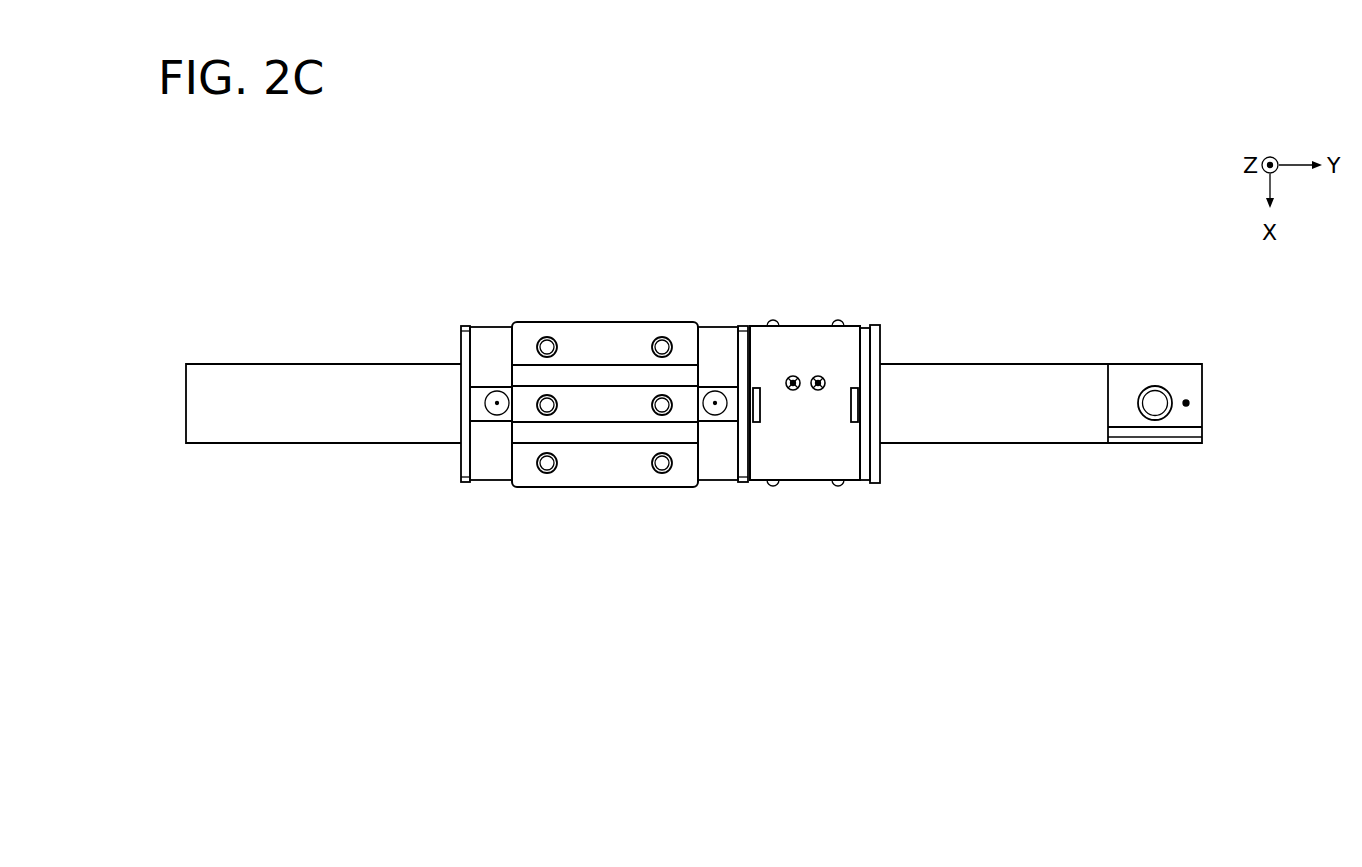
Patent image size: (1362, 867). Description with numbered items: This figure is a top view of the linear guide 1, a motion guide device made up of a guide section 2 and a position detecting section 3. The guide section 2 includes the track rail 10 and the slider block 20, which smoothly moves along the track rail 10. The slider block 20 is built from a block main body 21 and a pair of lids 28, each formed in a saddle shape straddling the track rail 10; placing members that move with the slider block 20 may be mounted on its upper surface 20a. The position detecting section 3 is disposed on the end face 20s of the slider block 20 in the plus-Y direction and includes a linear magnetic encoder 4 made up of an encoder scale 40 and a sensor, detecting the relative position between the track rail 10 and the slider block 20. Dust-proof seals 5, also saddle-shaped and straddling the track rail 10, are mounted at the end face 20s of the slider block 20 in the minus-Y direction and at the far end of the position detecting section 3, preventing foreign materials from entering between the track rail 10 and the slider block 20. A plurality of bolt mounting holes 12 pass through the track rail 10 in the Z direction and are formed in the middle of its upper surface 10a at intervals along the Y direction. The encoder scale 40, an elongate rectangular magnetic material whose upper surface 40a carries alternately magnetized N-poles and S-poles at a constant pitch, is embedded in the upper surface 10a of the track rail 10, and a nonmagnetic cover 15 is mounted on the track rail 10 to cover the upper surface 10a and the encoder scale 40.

The linear guide 1 is at (808, 253).
The guide section 2 is at (545, 290).
The position detecting section 3 is at (830, 298).
The linear magnetic encoder 4 is at (810, 403).
The dust-proof seal 5 is at (463, 460).
The track rail 10 is at (1128, 375).
The upper surface of the track rail 10a is at (1148, 403).
The bolt mounting hole 12 is at (1150, 405).
The nonmagnetic cover 15 is at (1028, 428).
The slider block 20 is at (634, 472).
The upper surface of the slider block 20a is at (605, 404).
The end face of the slider block 20s is at (465, 353).
The block main body 21 is at (573, 468).
The lid 28 is at (712, 325).
The encoder scale 40 is at (1122, 432).
The upper surface of the encoder scale 40a is at (1155, 432).